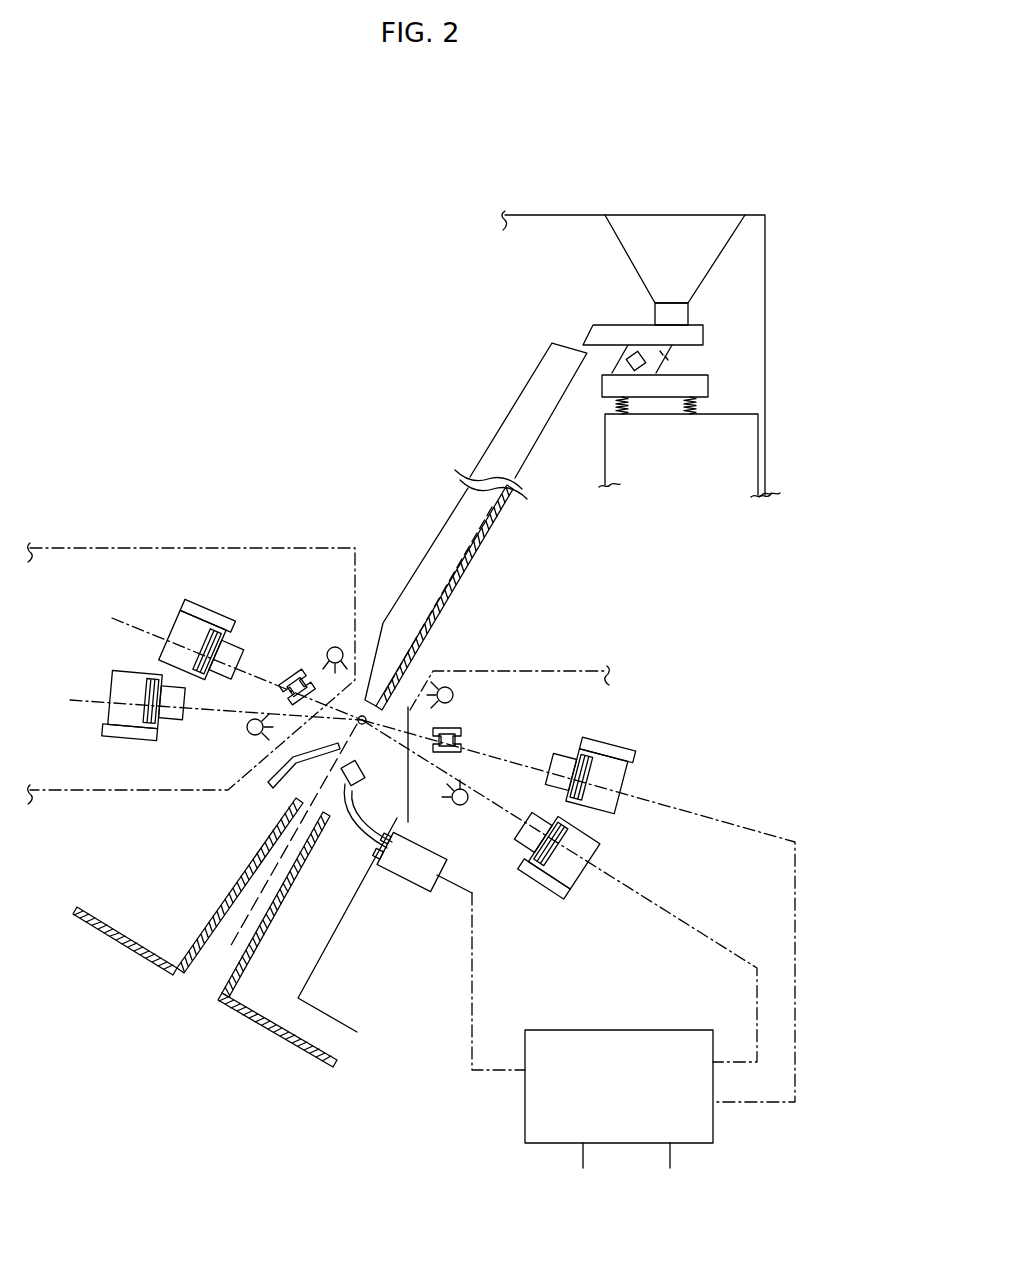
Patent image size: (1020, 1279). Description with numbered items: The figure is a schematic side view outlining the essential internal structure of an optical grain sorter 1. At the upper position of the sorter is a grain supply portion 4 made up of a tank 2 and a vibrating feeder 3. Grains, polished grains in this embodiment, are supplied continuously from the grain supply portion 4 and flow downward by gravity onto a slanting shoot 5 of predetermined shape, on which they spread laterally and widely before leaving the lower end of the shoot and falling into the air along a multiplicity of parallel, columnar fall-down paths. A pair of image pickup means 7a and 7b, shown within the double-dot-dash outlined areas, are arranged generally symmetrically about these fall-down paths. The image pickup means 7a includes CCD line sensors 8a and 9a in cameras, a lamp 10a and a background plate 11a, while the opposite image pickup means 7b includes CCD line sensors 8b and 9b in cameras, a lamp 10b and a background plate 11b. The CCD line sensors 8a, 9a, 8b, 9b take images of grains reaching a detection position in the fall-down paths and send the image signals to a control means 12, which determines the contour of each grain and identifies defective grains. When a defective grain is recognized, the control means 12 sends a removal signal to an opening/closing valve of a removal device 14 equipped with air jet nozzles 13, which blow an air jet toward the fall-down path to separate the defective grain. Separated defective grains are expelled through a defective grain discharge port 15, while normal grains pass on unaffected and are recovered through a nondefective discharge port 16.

The optical grain sorter 1 is at (582, 192).
The tank 2 is at (640, 245).
The vibrating feeder 3 is at (595, 333).
The grain supply portion 4 is at (799, 293).
The slanting shoot 5 is at (510, 372).
The image pickup means 7a is at (220, 547).
The image pickup means 7b is at (537, 670).
The CCD line sensor 8a is at (178, 622).
The CCD line sensor 8b is at (627, 745).
The CCD line sensor 9a is at (120, 737).
The CCD line sensor 9b is at (592, 852).
The lamp 10a is at (250, 733).
The lamp 10b is at (450, 688).
The background plate 11a is at (303, 664).
The background plate 11b is at (465, 718).
The control means 12 is at (707, 1133).
The air jet nozzle 13 is at (363, 774).
The removal device 14 is at (393, 894).
The defective grain discharge port 15 is at (308, 1022).
The nondefective discharge port 16 is at (213, 967).